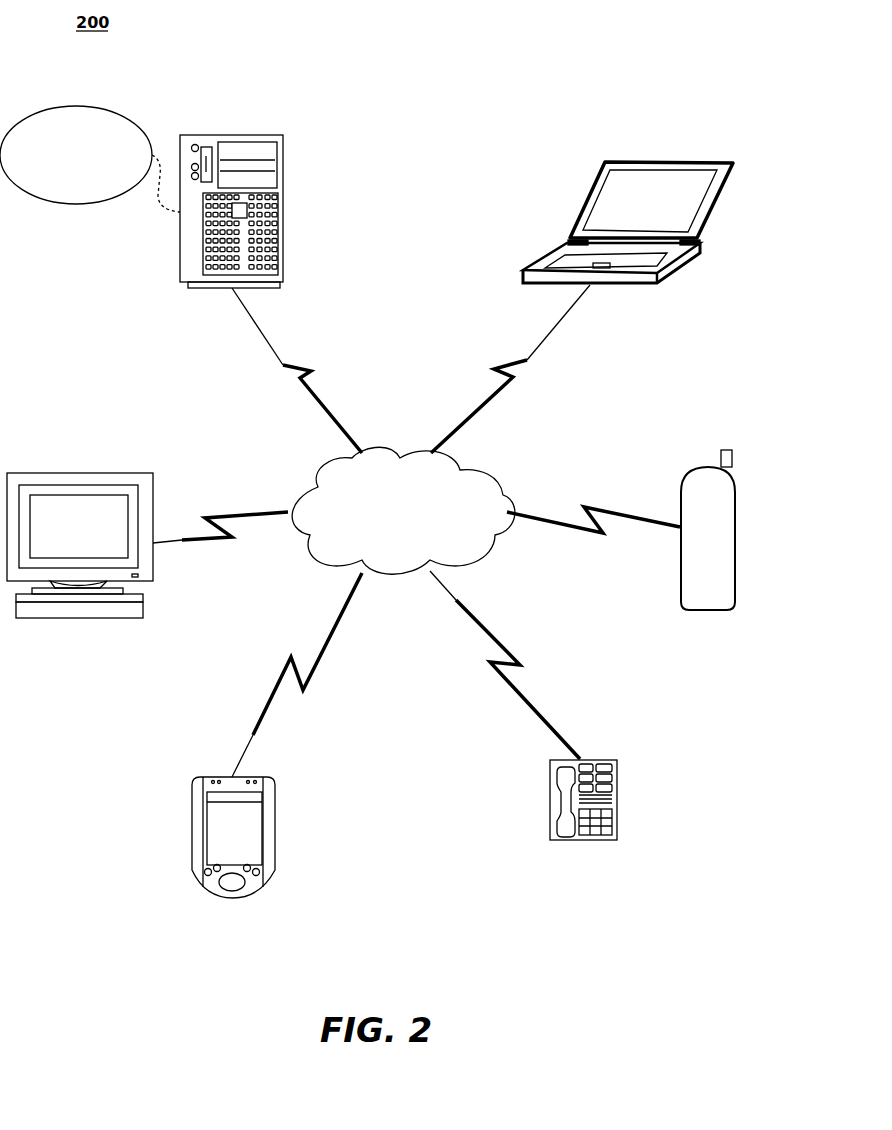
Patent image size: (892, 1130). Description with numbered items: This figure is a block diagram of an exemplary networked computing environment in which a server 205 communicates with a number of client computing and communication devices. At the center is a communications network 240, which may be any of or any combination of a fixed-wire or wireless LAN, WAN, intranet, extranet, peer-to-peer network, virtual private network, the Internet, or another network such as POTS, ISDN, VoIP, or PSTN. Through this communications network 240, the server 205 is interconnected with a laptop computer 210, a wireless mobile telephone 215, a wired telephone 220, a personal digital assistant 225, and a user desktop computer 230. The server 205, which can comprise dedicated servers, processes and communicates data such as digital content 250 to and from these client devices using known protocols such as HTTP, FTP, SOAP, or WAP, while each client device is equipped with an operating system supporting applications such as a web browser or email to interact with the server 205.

The server 205 is at (232, 135).
The laptop computer 210 is at (660, 162).
The wireless mobile telephone 215 is at (702, 467).
The wired telephone 220 is at (617, 760).
The personal digital assistant 225 is at (275, 838).
The user desktop computer 230 is at (78, 618).
The communications network 240 is at (300, 486).
The digital content 250 is at (90, 159).